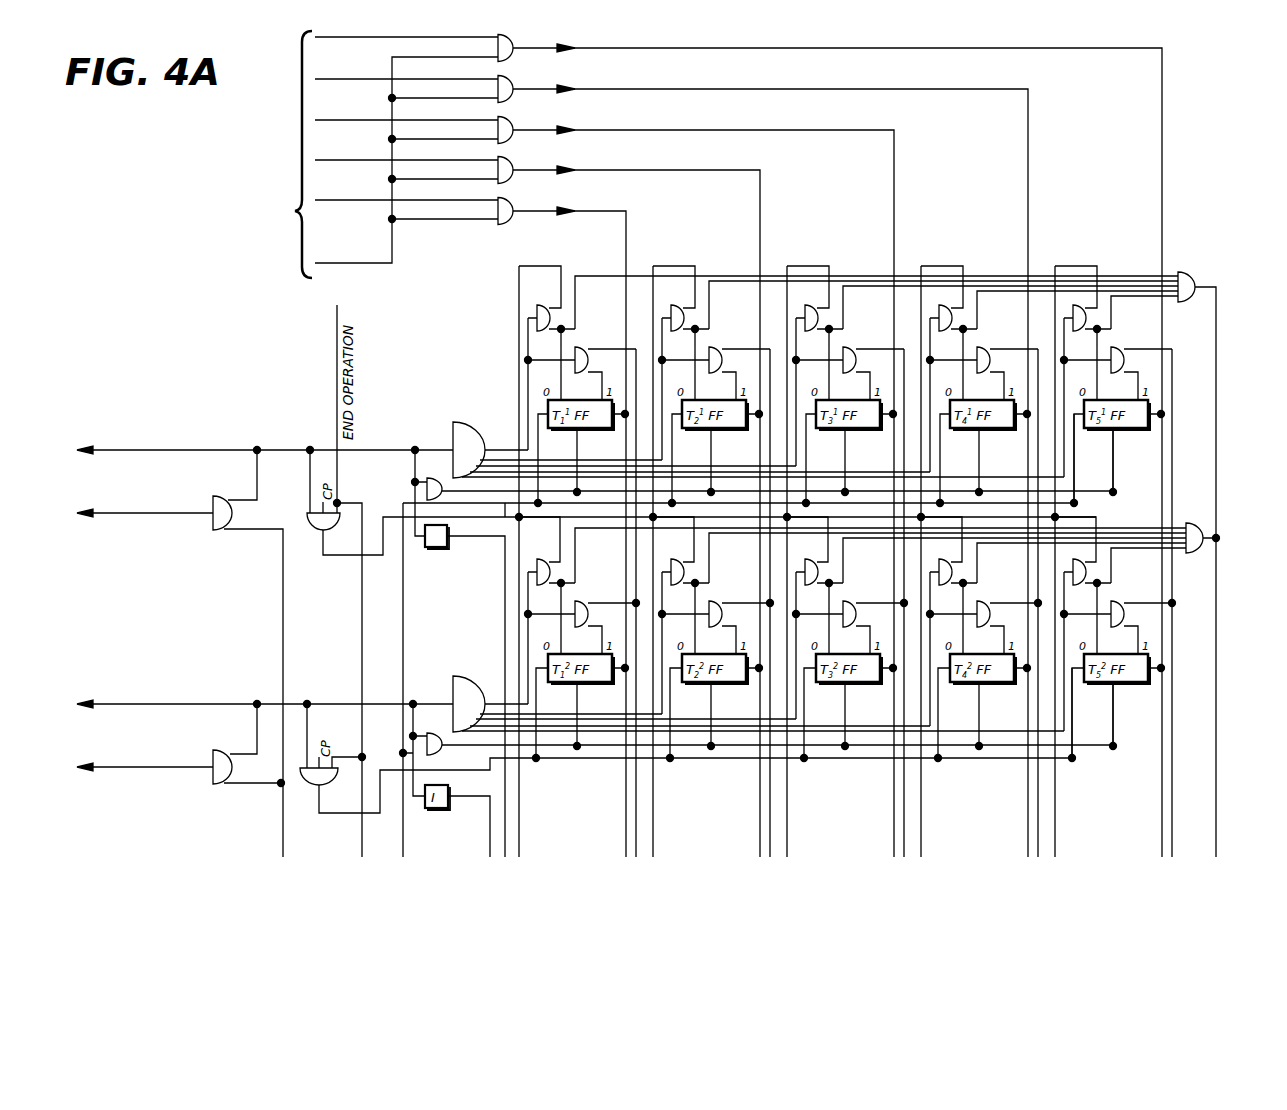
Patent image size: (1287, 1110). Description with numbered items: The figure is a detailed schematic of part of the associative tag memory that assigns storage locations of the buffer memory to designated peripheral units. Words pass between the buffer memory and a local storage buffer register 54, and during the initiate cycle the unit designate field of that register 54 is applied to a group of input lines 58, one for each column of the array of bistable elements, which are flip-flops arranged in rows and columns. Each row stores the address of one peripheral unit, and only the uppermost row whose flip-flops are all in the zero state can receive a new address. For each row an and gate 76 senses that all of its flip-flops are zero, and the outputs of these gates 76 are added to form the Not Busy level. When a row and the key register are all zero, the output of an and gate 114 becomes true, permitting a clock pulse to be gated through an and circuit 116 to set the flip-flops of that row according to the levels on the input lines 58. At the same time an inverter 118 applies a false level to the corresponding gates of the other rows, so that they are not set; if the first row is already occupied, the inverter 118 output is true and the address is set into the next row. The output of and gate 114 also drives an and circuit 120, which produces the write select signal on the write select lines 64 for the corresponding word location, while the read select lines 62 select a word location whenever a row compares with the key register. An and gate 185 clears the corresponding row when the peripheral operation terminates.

The local storage buffer register 54 is at (279, 154).
The input lines 58 is at (669, 190).
The read select output lines 62 is at (185, 706).
The write select lines 64 is at (155, 770).
The and gate 76 is at (1202, 524).
The and gate 114 is at (462, 420).
The and circuit 116 is at (431, 477).
The inverter 118 is at (439, 549).
The and circuit 120 is at (222, 533).
The and gate 185 is at (306, 520).